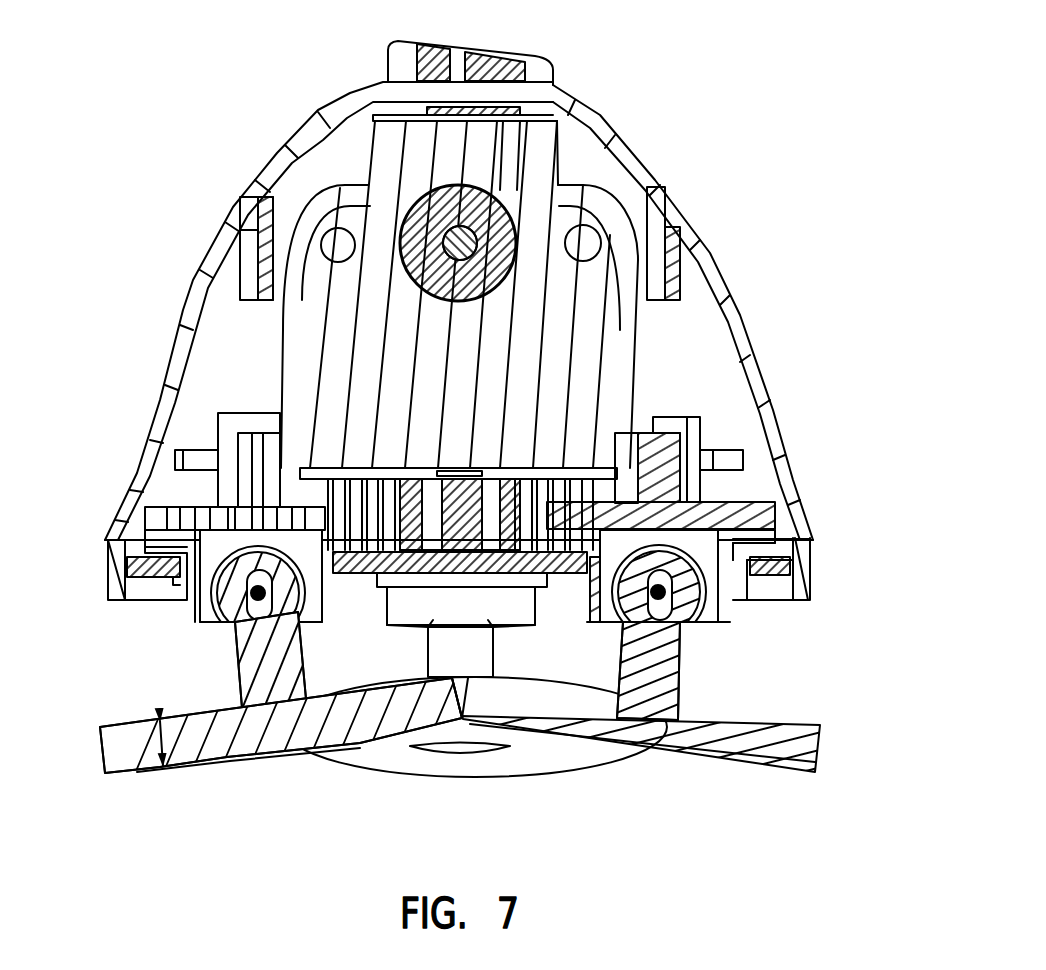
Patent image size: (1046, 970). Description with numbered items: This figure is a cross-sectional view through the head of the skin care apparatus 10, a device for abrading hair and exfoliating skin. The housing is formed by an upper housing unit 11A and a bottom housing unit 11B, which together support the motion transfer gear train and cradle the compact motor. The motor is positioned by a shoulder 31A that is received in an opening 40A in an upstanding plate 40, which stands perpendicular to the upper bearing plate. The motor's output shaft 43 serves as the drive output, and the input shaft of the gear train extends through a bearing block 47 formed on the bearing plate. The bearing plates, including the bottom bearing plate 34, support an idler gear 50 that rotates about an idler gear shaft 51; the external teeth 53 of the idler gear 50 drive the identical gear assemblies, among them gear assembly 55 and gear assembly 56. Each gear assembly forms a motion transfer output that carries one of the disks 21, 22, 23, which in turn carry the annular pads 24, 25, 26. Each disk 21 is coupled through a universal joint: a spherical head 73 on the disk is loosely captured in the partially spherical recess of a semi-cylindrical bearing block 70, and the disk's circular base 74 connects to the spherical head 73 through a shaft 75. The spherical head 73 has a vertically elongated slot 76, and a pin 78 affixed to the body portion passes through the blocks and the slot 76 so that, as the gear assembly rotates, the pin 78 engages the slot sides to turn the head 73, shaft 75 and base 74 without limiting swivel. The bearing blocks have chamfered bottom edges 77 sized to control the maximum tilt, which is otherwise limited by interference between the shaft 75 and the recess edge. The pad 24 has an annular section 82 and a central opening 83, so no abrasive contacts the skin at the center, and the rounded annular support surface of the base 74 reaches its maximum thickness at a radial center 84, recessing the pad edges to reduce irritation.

The skin care apparatus 10 is at (820, 236).
The upper housing unit 11A is at (690, 217).
The bottom housing unit 11B is at (813, 585).
The disk 21 is at (513, 777).
The disk 22 is at (822, 722).
The disk 23 is at (148, 670).
The annular pad 24 is at (452, 767).
The annular pad 25 is at (753, 773).
The annular pad 26 is at (137, 773).
The shoulder 31A is at (423, 218).
The bottom bearing plate 34 is at (792, 560).
The upstanding plate 40 is at (620, 345).
The opening 40A is at (420, 220).
The output shaft 43 is at (510, 220).
The bearing block 47 is at (515, 190).
The idler gear 50 is at (563, 487).
The idler gear shaft 51 is at (473, 477).
The external teeth 53 is at (397, 523).
The gear assembly 55 is at (715, 540).
The gear assembly 56 is at (173, 522).
The bearing block 70 is at (760, 535).
The spherical head 73 is at (233, 597).
The circular base 74 is at (100, 742).
The shaft 75 is at (258, 605).
The slot 76 is at (233, 667).
The chamfered bottom edge 77 is at (618, 622).
The pin 78 is at (660, 600).
The annular section 82 is at (180, 770).
The central opening 83 is at (257, 763).
The radial center 84 is at (150, 767).